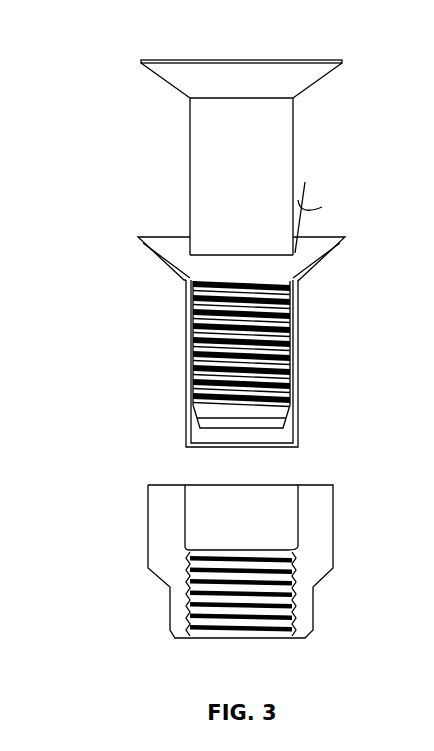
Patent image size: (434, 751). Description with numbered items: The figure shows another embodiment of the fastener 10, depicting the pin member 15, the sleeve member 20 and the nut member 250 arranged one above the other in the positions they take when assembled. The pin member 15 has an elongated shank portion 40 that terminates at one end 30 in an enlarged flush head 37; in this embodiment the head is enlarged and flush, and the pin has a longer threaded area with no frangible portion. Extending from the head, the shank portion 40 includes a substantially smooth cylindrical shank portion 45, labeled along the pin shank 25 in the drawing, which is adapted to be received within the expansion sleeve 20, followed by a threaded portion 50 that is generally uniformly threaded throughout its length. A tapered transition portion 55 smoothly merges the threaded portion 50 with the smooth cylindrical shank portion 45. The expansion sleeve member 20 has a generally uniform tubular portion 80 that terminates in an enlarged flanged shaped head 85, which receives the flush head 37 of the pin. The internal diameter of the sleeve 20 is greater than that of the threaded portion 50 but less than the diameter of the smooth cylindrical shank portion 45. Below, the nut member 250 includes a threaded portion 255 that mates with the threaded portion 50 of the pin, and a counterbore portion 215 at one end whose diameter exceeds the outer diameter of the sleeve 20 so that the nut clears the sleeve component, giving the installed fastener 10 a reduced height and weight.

The fastener 10 is at (195, 223).
The pin member 15 is at (194, 75).
The end 30 is at (232, 72).
The flush head 37 is at (167, 88).
The shank 25 is at (197, 176).
The smooth cylindrical shank portion 45 is at (202, 159).
The shank portion 40 is at (164, 176).
The tapered transition portion 55 is at (197, 284).
The flanged shaped head 85 is at (160, 263).
The sleeve member 20 is at (197, 342).
The tubular portion 80 is at (186, 350).
The threaded portion 50 is at (196, 385).
The nut member 250 is at (217, 564).
The counterbore portion 215 is at (292, 525).
The threaded portion 255 is at (292, 608).